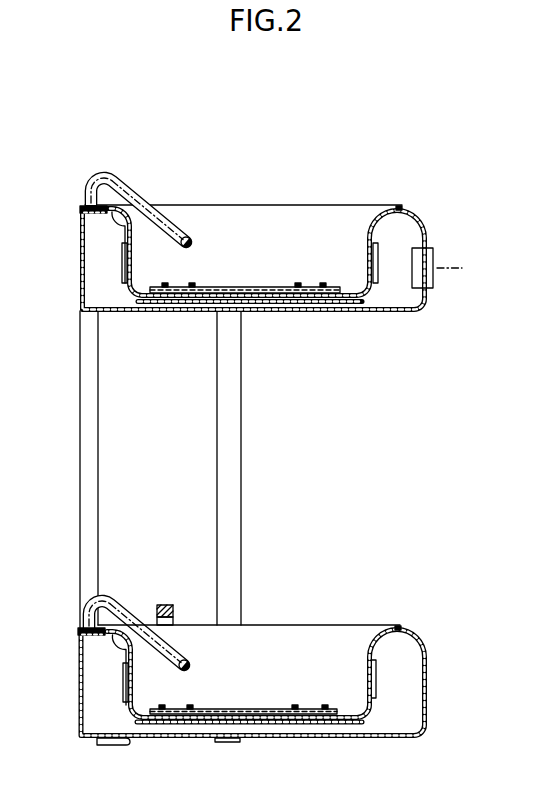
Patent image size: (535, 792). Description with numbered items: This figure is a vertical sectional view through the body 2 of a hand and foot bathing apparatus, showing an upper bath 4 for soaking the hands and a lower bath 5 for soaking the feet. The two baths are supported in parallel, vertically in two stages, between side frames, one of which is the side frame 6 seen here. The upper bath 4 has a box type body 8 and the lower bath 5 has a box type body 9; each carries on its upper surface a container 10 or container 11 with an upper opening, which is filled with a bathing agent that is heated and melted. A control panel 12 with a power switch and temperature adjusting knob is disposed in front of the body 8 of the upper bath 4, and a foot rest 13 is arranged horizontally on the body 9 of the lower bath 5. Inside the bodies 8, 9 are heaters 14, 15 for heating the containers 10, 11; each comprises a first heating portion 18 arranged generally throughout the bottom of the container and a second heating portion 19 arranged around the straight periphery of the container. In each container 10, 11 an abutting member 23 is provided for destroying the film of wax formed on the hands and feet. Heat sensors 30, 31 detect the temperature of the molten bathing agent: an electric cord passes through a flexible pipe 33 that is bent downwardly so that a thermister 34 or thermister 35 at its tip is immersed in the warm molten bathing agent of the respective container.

The body 2 is at (412, 205).
The upper bath 4 is at (69, 240).
The lower bath 5 is at (219, 685).
The side frame 6 is at (79, 470).
The box type body 8 is at (80, 221).
The box type body 9 is at (78, 653).
The container 10 is at (123, 232).
The container 11 is at (120, 664).
The control panel 12 is at (449, 268).
The foot rest 13 is at (162, 605).
The heater 14 is at (191, 506).
The heater 15 is at (36, 715).
The first heating portion 18 is at (163, 311).
The second heating portion 19 is at (122, 272).
The abutting member 23 is at (290, 286).
The heat sensor 30 is at (161, 174).
The heat sensor 31 is at (142, 554).
The flexible pipe 33 is at (130, 187).
The thermister 34 is at (198, 240).
The thermister 35 is at (192, 655).